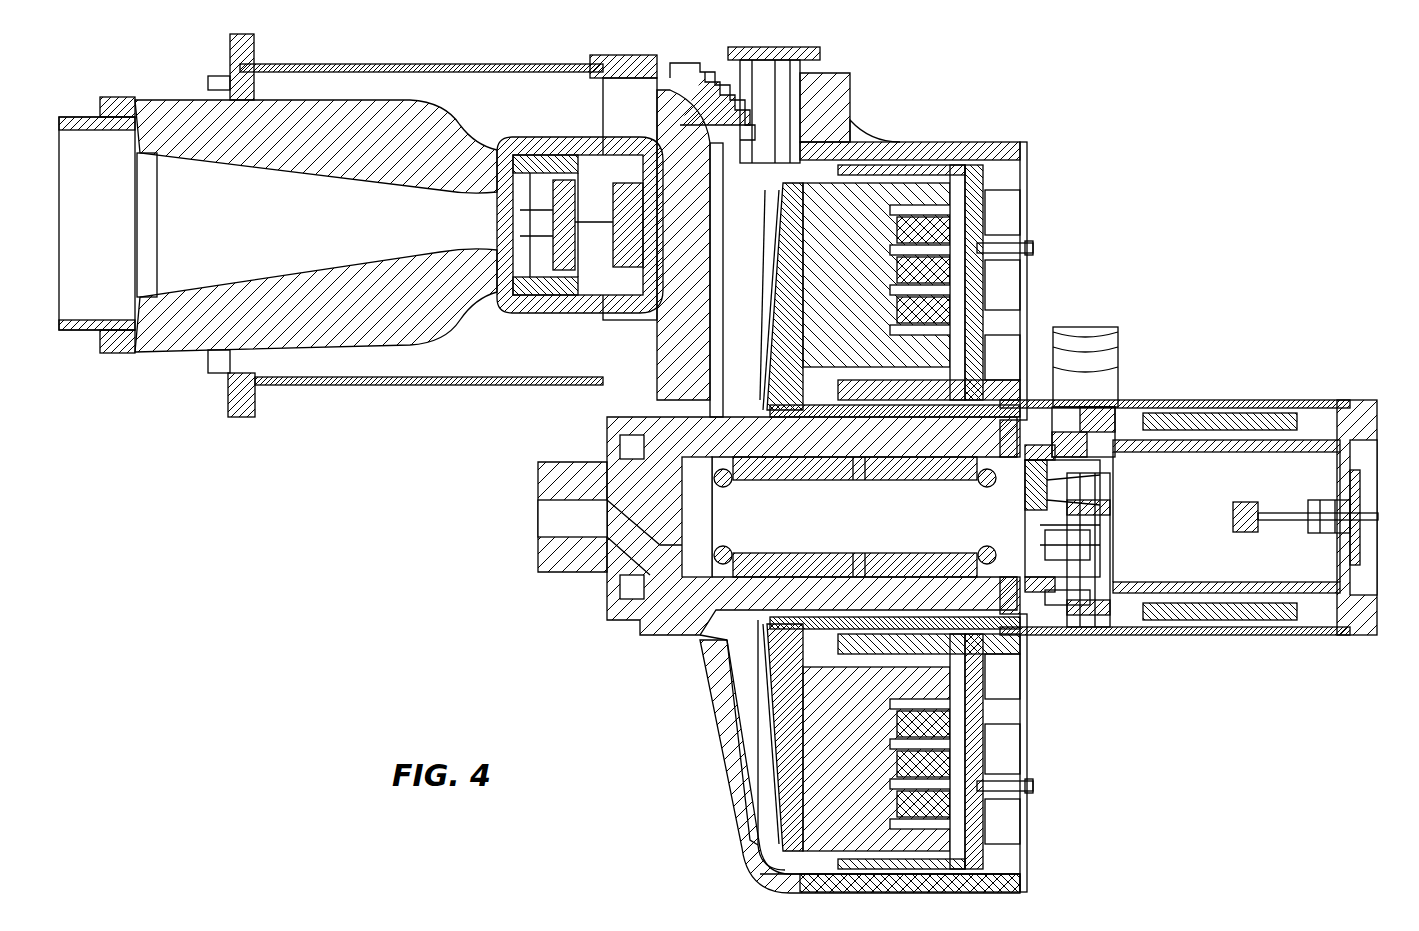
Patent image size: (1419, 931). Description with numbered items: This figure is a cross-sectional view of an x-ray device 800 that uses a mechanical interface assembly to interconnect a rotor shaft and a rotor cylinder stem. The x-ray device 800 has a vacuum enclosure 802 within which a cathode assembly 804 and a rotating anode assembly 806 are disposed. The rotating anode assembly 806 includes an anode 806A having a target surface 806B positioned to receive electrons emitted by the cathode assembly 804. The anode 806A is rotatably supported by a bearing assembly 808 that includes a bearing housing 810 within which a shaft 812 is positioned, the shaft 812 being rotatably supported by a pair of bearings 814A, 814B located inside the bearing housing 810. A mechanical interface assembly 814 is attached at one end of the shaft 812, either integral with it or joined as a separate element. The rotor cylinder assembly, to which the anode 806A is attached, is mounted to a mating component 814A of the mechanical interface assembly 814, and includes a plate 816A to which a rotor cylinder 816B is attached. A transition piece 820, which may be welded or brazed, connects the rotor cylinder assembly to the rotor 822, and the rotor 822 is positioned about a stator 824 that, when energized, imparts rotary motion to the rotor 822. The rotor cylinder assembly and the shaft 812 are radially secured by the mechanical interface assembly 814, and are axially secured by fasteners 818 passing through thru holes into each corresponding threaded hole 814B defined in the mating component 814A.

The x-ray device 800 is at (1215, 170).
The vacuum enclosure 802 is at (470, 62).
The cathode assembly 804 is at (400, 358).
The rotating anode assembly 806 is at (747, 650).
The anode 806A is at (762, 872).
The target surface 806B is at (745, 845).
The bearing assembly 808 is at (597, 590).
The bearing housing 810 is at (1040, 400).
The shaft 812 is at (838, 528).
The mechanical interface assembly 814 is at (1100, 500).
The bearings; mating component 814A is at (704, 496).
The bearings; threaded hole 814B is at (1055, 435).
The plate 816A is at (1100, 637).
The rotor cylinder 816B is at (903, 396).
The fasteners 818 is at (1105, 450).
The transition piece 820 is at (1095, 430).
The rotor 822 is at (1228, 423).
The stator 824 is at (1312, 445).